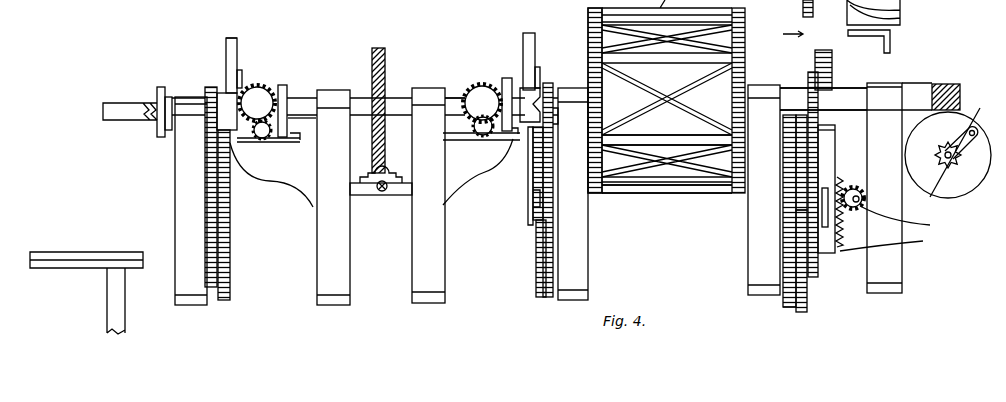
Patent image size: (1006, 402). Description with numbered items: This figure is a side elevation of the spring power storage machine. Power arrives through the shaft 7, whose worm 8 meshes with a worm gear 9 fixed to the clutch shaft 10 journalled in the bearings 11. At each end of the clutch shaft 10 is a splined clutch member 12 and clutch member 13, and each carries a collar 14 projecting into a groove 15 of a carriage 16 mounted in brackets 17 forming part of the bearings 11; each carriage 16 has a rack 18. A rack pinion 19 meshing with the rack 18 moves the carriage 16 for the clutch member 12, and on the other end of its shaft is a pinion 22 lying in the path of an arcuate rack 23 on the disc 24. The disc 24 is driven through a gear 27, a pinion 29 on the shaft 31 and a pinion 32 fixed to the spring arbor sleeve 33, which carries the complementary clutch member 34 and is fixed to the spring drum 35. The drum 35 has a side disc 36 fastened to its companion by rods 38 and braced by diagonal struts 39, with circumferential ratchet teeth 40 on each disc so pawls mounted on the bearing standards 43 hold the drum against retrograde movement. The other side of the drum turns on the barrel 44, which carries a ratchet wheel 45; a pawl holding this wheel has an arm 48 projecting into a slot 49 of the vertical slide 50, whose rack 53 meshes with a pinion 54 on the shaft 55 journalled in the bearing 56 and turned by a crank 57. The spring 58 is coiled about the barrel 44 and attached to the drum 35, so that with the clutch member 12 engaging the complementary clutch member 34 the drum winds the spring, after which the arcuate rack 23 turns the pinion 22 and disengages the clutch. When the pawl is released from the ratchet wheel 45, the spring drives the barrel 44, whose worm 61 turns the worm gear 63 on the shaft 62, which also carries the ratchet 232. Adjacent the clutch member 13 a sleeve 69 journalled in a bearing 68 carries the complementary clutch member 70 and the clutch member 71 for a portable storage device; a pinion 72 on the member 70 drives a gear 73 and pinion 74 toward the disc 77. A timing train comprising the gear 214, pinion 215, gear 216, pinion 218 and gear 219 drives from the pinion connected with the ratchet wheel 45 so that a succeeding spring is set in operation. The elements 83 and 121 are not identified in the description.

The shaft 7 is at (378, 196).
The worm 8 is at (386, 192).
The worm gear 9 is at (385, 70).
The clutch shaft 10 is at (448, 97).
The bearings 11 is at (327, 235).
The clutch member 12 is at (553, 140).
The clutch member 13 is at (303, 119).
The collar 14 is at (289, 88).
The groove 15 is at (292, 143).
The carriage 16 is at (270, 140).
The brackets 17 is at (285, 185).
The rack 18 is at (257, 144).
The rack pinion 19 is at (480, 64).
The pinion 22 is at (272, 88).
The arcuate rack 23 is at (225, 74).
The disc 24 is at (243, 75).
The gear 27 is at (538, 262).
The pinion 29 is at (535, 213).
The shaft 31 is at (530, 199).
The pinion 32 is at (556, 116).
The spring arbor sleeve 33 is at (594, 106).
The complementary clutch member 34 is at (549, 85).
The spring drum 35 is at (652, 188).
The side disc 36 is at (548, 212).
The rods 38 is at (670, 140).
The diagonal struts 39 is at (667, 99).
The circumferential ratchet teeth 40 is at (744, 50).
The bearing standards 43 is at (587, 258).
The barrel 44 is at (790, 87).
The ratchet wheel 45 is at (833, 63).
The arm 48 is at (838, 184).
The slot 49 is at (845, 236).
The vertical slide 50 is at (836, 135).
The rack 53 is at (900, 14).
The pinion 54 is at (904, 220).
The shaft 55 is at (860, 199).
The bearing 56 is at (862, 191).
The crank 57 is at (891, 48).
The spring 58 is at (680, 178).
The worm 61 is at (956, 83).
The shaft 62 is at (977, 135).
The worm gear 63 is at (977, 182).
The bearing 68 is at (182, 96).
The sleeve 69 is at (168, 131).
The complementary clutch member 70 is at (222, 94).
The clutch member 71 is at (160, 137).
The pinion 72 is at (204, 118).
The gear 73 is at (205, 212).
The pinion 74 is at (231, 222).
The disc 77 is at (238, 45).
The bracket 83 is at (70, 252).
The gear 121 is at (819, 76).
The gear 214 is at (790, 306).
The pinion 215 is at (784, 227).
The gear 216 is at (808, 298).
The pinion 218 is at (784, 194).
The gear 219 is at (777, 7).
The ratchet 232 is at (943, 180).